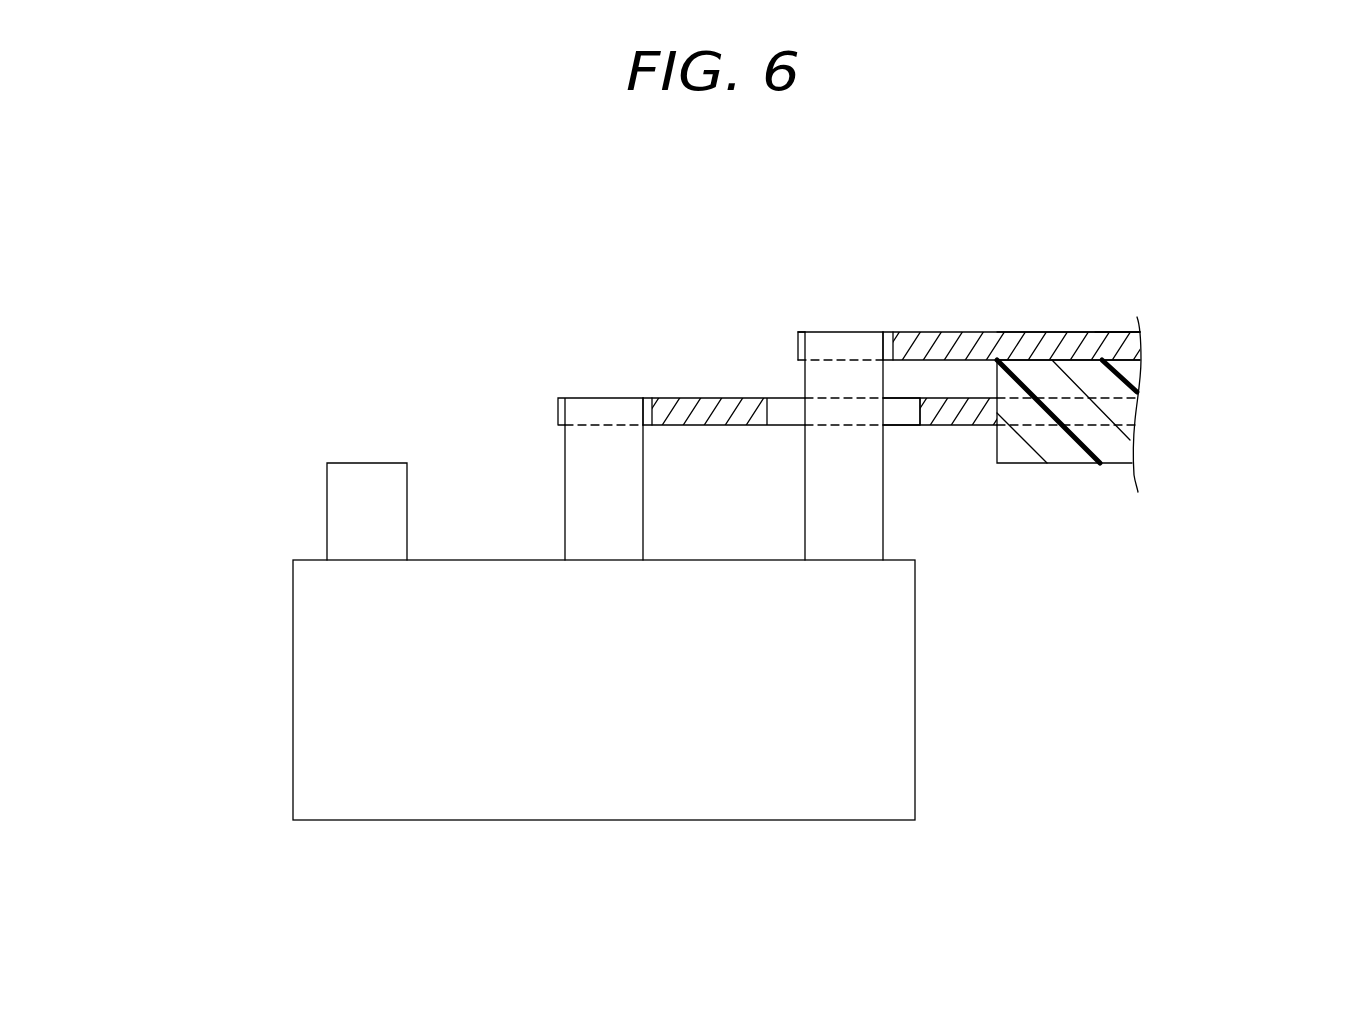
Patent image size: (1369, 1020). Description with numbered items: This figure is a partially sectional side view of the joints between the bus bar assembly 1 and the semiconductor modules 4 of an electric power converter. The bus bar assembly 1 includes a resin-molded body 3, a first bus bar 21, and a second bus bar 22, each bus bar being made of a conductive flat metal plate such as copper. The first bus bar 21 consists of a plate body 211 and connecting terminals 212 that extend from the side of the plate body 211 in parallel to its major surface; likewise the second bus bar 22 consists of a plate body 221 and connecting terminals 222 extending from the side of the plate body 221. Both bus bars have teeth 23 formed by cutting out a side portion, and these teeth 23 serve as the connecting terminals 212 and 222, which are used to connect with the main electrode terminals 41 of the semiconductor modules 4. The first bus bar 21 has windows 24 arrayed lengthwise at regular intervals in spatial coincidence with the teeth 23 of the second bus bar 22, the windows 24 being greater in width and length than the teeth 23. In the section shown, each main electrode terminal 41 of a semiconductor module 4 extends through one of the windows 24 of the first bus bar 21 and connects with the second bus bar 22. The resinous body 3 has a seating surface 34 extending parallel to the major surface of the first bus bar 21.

The bus bar assembly 1 is at (969, 284).
The first bus bar 21 is at (710, 397).
The plate body 211 is at (1069, 450).
The connecting terminals 212 is at (592, 413).
The second bus bar 22 is at (1012, 333).
The plate body 221 is at (1110, 333).
The connecting terminals 222 is at (835, 345).
The teeth 23 is at (652, 413).
The windows 24 is at (901, 421).
The resin-molded body 3 is at (1094, 414).
The seating surface 34 is at (1070, 333).
The semiconductor modules 4 is at (408, 717).
The main electrode terminals 41 is at (362, 519).